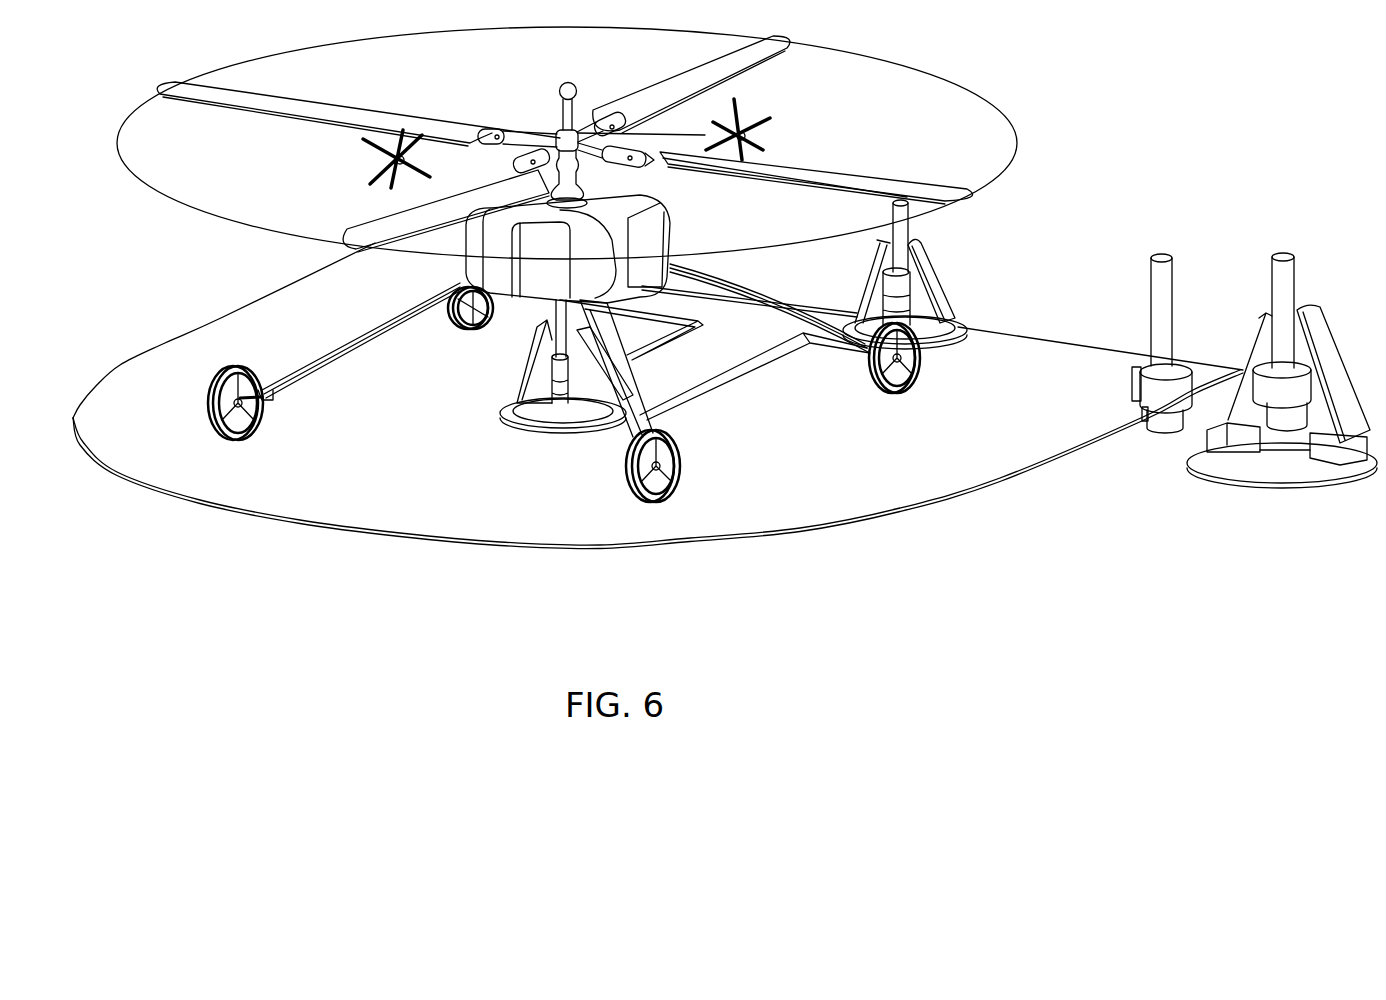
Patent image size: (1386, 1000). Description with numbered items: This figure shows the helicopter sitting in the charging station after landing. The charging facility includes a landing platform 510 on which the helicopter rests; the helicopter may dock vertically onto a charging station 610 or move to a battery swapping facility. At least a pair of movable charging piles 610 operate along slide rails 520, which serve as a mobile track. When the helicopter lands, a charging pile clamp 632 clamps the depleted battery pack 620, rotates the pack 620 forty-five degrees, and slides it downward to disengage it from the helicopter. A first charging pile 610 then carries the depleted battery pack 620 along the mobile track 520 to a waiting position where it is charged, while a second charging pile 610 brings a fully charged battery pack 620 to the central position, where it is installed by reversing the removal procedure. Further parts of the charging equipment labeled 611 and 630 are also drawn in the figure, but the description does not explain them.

The landing platform 510 is at (227, 317).
The slide rails 520 is at (727, 378).
The charging pile 610 is at (930, 270).
The support brace 611 is at (1327, 438).
The battery pack 620 is at (1273, 350).
The locking device 630 is at (1146, 377).
The charging pile clamp 632 is at (1183, 367).